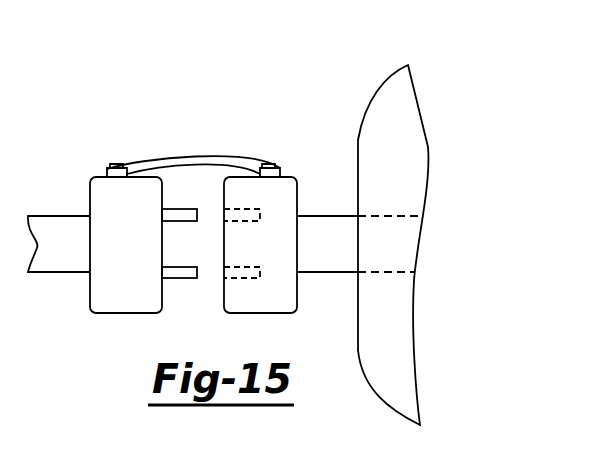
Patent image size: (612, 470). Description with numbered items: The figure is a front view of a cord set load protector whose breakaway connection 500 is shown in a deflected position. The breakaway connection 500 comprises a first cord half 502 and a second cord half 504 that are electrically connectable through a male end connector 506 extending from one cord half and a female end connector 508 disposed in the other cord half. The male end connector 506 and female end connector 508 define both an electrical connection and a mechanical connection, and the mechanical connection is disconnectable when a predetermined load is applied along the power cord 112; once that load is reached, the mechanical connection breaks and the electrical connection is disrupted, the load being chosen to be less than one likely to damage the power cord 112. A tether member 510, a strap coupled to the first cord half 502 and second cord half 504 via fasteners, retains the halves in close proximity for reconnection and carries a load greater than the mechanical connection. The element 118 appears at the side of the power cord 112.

The breakaway connection 500 is at (225, 80).
The first cord half 502 is at (97, 177).
The second cord half 504 is at (288, 177).
The male end connector 506 is at (180, 208).
The female end connector 508 is at (243, 208).
The tether member 510 is at (157, 163).
The power cord 112 is at (328, 216).
The blade 118 is at (408, 110).